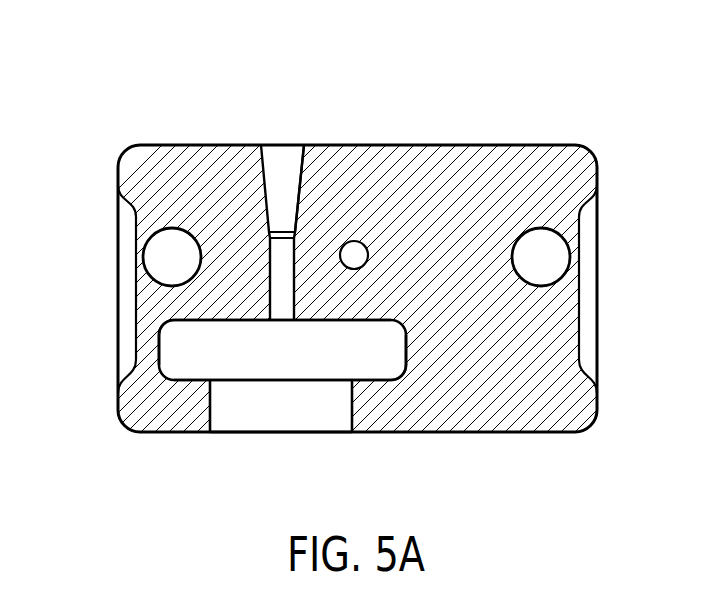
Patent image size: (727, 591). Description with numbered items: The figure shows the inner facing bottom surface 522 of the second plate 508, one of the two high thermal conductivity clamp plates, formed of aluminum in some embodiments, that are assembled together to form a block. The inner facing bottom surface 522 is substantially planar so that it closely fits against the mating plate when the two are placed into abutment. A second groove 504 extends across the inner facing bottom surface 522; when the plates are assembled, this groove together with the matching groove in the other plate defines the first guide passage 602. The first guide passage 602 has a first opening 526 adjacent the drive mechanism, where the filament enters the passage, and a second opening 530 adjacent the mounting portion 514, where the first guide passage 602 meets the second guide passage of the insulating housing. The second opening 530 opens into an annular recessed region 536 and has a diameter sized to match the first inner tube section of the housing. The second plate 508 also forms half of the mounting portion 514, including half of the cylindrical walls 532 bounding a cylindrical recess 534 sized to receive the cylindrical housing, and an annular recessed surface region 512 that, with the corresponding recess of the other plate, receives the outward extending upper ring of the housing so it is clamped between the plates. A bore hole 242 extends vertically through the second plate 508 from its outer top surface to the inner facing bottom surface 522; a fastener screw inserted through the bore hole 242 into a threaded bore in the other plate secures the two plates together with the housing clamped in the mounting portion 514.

The second plate 508 is at (590, 145).
The inner facing bottom surface 522 is at (168, 178).
The bore hole 242 is at (362, 248).
The first guide passage 602 is at (284, 182).
The second groove 504 is at (277, 143).
The first opening 526 is at (307, 132).
The mounting portion 514 is at (389, 306).
The annular recessed region 536 is at (178, 343).
The annular recessed surface region 512 is at (168, 357).
The cylindrical walls 532 is at (240, 432).
The cylindrical recess 534 is at (285, 405).
The second opening 530 is at (296, 327).